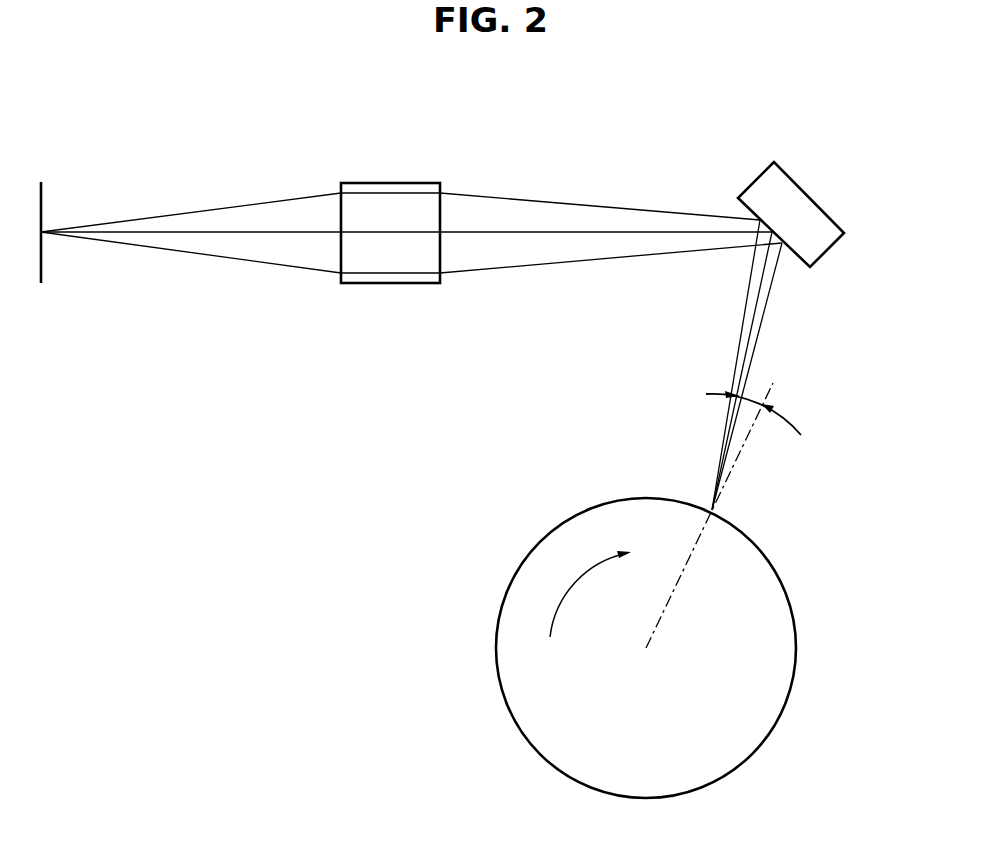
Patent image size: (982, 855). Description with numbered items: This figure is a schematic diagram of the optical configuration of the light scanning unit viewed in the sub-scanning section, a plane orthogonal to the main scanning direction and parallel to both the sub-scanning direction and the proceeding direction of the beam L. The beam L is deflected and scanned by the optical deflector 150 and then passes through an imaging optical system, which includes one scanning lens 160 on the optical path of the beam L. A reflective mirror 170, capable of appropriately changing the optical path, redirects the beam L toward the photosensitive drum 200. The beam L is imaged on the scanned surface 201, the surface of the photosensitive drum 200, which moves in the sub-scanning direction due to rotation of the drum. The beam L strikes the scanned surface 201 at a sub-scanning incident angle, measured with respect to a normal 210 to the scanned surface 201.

The optical deflector 150 is at (41, 205).
The scanning lens 160 is at (380, 183).
The reflective mirror 170 is at (788, 170).
The beam L is at (747, 325).
The normal 210 is at (747, 443).
The photosensitive drum 200 is at (683, 670).
The scanned surface 201 is at (792, 602).